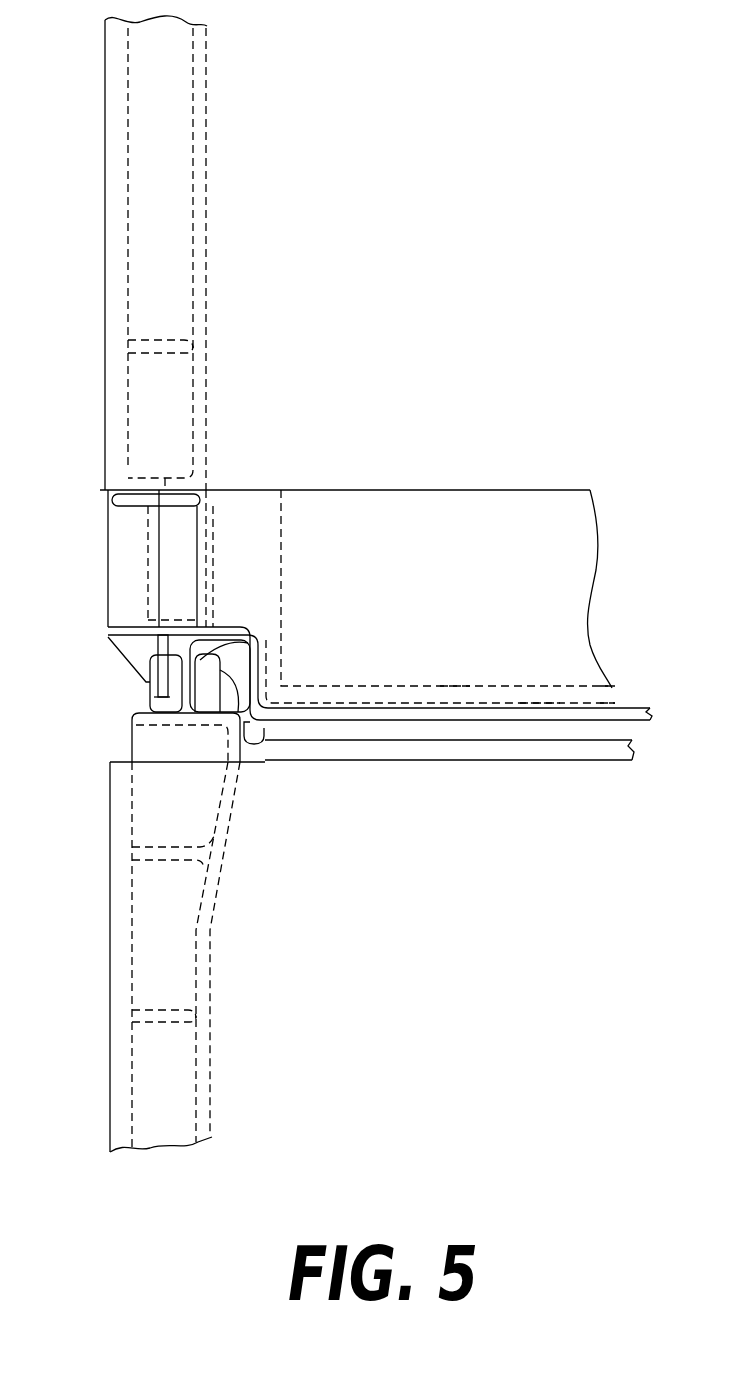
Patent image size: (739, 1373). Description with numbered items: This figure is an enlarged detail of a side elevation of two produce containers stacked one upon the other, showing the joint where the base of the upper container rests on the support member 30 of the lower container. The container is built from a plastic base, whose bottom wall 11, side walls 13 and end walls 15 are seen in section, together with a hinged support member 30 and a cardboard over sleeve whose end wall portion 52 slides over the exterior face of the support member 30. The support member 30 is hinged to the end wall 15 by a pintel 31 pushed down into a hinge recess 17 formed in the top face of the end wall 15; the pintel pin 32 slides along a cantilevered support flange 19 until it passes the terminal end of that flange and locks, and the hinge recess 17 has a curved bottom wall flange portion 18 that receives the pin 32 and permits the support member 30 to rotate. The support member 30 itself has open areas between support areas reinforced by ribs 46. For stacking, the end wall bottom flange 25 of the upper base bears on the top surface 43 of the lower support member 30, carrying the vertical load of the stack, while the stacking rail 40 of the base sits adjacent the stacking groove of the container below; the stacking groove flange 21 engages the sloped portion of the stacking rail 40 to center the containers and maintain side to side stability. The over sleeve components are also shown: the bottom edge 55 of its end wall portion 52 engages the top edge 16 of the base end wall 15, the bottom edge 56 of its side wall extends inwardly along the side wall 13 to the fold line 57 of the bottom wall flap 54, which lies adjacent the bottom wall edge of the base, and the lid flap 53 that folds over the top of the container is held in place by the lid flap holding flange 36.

The bottom wall 11 is at (630, 708).
The side wall 13 is at (463, 564).
The end wall 15 is at (108, 575).
The top edge 16 is at (178, 480).
The hinge recess 17 is at (180, 523).
The bottom wall flange portion 18 is at (165, 615).
The cantilevered support flange 19 is at (180, 562).
The stacking groove flange 21 is at (262, 673).
The end wall bottom flange 25 is at (132, 686).
The support member 30 is at (177, 223).
The pintel 31 is at (172, 542).
The pin 32 is at (152, 600).
The lid flap holding flange 36 is at (265, 740).
The stacking rail 40 is at (263, 640).
The top surface 43 is at (132, 713).
The rib 46 is at (183, 326).
The end wall portion 52 is at (105, 280).
The lid flap 53 is at (500, 758).
The bottom wall flap 54 is at (448, 690).
The bottom edge 55 is at (108, 490).
The bottom edge 56 is at (615, 690).
The fold line 57 is at (536, 690).